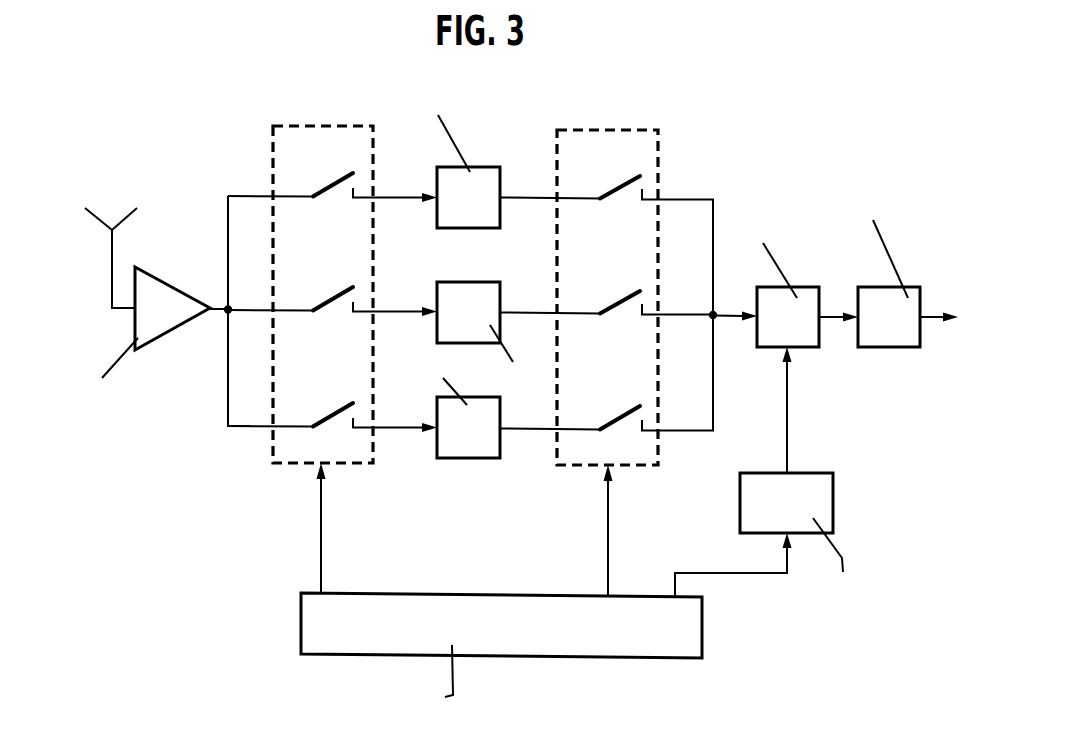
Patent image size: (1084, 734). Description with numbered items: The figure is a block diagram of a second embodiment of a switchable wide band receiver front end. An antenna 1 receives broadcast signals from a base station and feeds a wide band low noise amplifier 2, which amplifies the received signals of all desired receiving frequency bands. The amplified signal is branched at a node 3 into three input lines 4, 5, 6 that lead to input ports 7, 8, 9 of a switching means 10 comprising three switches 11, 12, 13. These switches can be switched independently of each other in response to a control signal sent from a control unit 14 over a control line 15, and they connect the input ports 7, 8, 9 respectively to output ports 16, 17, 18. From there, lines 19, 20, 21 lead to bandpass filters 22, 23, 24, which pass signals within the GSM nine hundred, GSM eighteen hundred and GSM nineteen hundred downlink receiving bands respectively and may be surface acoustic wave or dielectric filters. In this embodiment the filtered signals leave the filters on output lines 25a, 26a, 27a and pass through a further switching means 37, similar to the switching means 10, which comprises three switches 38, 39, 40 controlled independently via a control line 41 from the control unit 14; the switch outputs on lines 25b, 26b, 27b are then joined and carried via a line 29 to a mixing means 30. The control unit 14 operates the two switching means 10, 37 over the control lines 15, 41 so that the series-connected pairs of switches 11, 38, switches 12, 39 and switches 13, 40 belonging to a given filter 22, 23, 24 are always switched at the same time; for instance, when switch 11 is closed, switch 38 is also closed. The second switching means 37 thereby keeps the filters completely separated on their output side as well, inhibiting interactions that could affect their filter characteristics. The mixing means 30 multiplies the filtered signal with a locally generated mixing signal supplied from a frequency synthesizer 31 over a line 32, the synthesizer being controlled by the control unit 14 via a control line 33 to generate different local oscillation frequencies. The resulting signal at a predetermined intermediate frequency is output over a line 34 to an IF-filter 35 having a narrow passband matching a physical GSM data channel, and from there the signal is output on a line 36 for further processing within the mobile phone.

The antenna 1 is at (103, 212).
The wide band low noise amplifier 2 is at (146, 342).
The node 3 is at (222, 313).
The input line 4 is at (228, 248).
The input line 5 is at (232, 313).
The input line 6 is at (240, 427).
The input port 7 is at (270, 190).
The input port 8 is at (270, 306).
The input port 9 is at (268, 422).
The switching means 10 is at (322, 125).
The switch 11 is at (332, 187).
The switch 12 is at (332, 302).
The switch 13 is at (332, 418).
The control unit 14 is at (497, 653).
The control line 15 is at (322, 533).
The output port 16 is at (373, 199).
The output port 17 is at (373, 313).
The output port 18 is at (373, 430).
The line 19 is at (403, 193).
The line 20 is at (403, 308).
The line 21 is at (403, 424).
The bandpass filter 22 is at (441, 155).
The bandpass filter 23 is at (474, 330).
The bandpass filter 24 is at (468, 418).
The first filter output line 25a is at (518, 195).
The first switch output line 25b is at (680, 197).
The second filter output line 26a is at (517, 310).
The second switch output line 26b is at (680, 312).
The third filter output line 27a is at (517, 425).
The third switch output line 27b is at (680, 428).
The line 29 is at (728, 312).
The mixing means 30 is at (782, 277).
The frequency synthesizer 31 is at (852, 555).
The line 32 is at (790, 418).
The control line 33 is at (745, 575).
The line 34 is at (826, 314).
The IF-filter 35 is at (894, 253).
The line 36 is at (928, 314).
The second switching means 37 is at (612, 128).
The switch 38 is at (605, 190).
The switch 39 is at (605, 305).
The switch 40 is at (605, 420).
The control line 41 is at (606, 537).